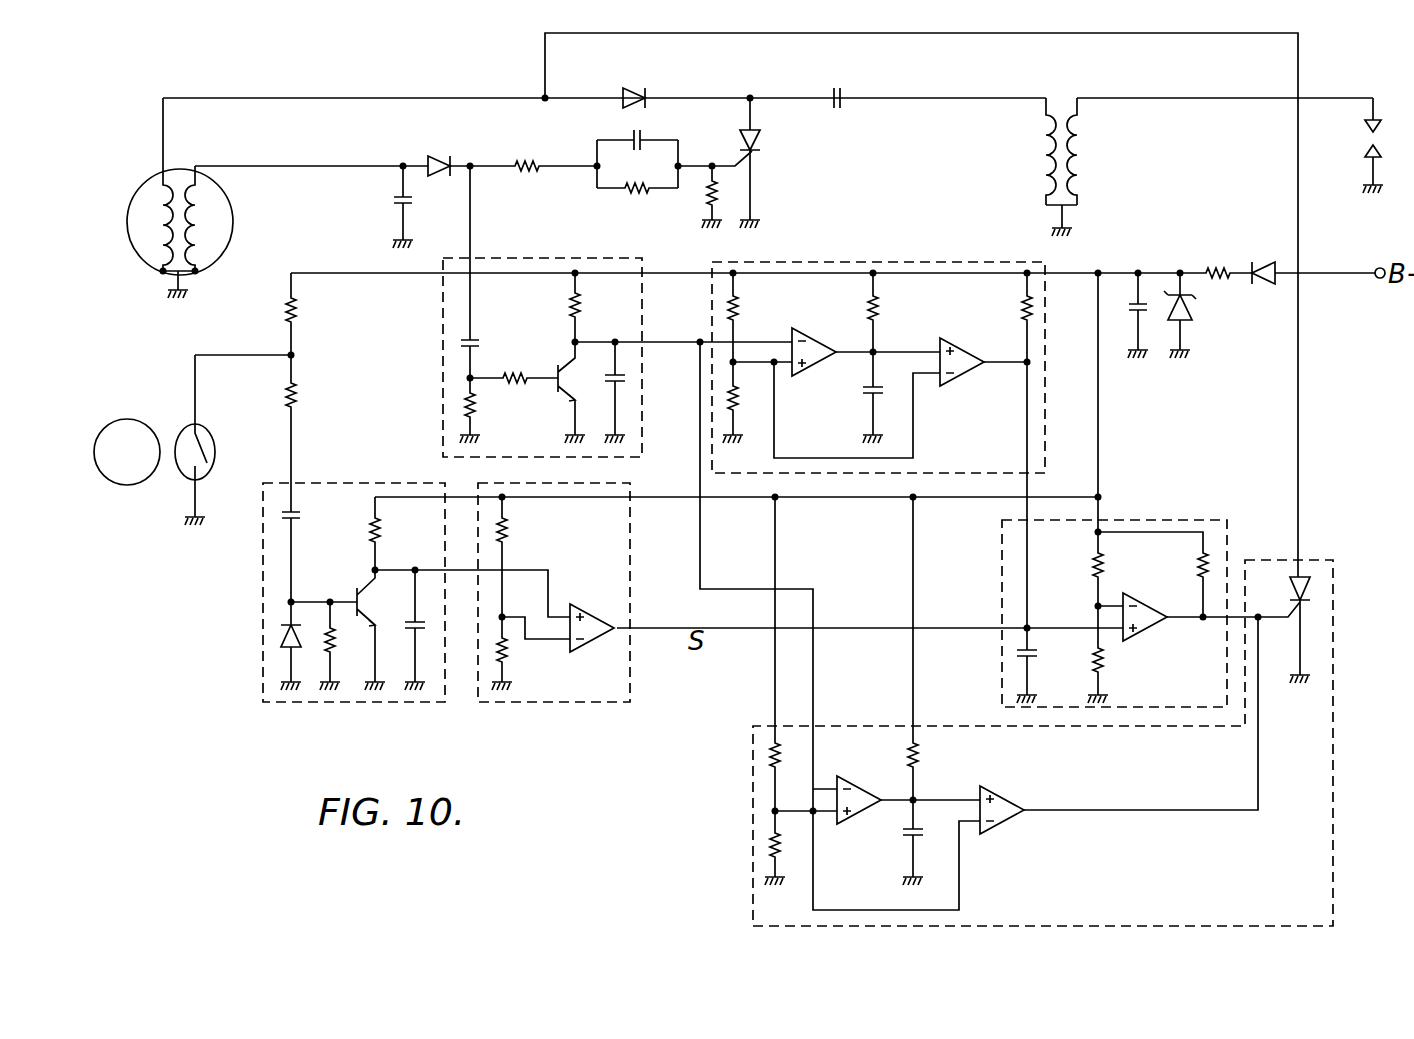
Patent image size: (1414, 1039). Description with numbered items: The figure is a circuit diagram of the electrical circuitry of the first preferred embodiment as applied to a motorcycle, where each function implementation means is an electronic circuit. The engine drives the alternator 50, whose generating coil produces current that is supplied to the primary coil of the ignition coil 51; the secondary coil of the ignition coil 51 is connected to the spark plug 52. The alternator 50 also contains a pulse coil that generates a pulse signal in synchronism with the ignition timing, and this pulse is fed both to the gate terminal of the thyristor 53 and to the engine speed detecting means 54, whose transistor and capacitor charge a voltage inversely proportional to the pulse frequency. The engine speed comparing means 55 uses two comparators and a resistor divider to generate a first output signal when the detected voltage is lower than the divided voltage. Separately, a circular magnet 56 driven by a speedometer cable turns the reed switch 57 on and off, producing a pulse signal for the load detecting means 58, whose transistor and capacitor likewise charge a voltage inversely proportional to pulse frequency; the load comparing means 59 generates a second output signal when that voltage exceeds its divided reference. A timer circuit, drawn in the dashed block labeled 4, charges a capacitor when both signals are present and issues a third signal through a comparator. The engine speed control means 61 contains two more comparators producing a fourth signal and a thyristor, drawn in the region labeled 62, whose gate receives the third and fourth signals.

The comparator circuit 4 is at (1182, 520).
The alternator 50 is at (142, 194).
The ignition coil 51 is at (1082, 194).
The spark plug 52 is at (1383, 134).
The thyristor 53 is at (760, 142).
The engine speed detecting means 54 is at (528, 258).
The engine speed comparing means 55 is at (930, 262).
The circular magnet 56 is at (117, 426).
The reed switch 57 is at (206, 440).
The load detecting means 58 is at (342, 702).
The load comparing means 59 is at (560, 702).
The engine speed control means 61 is at (1335, 806).
The thyristor 62 is at (1312, 588).